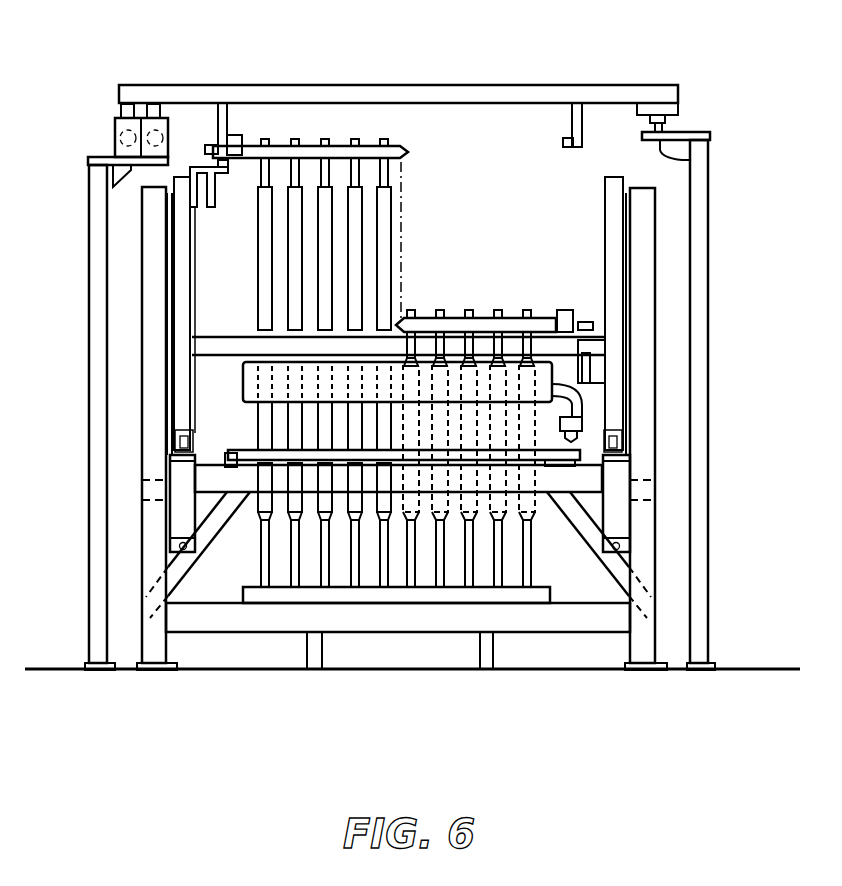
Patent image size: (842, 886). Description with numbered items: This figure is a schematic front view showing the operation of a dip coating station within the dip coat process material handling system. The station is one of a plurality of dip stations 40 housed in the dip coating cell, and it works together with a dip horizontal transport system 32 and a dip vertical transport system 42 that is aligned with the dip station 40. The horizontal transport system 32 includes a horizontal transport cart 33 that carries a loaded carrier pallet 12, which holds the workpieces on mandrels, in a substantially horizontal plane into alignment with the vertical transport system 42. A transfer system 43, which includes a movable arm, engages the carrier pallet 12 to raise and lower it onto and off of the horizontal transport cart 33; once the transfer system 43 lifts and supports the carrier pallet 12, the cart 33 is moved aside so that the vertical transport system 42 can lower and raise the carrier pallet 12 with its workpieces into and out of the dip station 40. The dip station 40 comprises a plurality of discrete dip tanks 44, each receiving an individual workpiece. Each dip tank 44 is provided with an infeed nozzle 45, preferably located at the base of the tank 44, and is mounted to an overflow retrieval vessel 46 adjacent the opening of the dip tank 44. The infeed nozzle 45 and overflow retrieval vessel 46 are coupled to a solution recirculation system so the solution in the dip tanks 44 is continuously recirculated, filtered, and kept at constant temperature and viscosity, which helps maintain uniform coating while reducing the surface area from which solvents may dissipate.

The carrier pallet 12 is at (402, 149).
The dip horizontal transport system 32 is at (115, 137).
The horizontal transport cart 33 is at (469, 90).
The dip station 40 is at (672, 422).
The dip vertical transport system 42 is at (178, 256).
The transfer system 43 is at (227, 200).
The dip tank 44 is at (262, 428).
The infeed nozzle 45 is at (263, 562).
The overflow retrieval vessel 46 is at (246, 383).